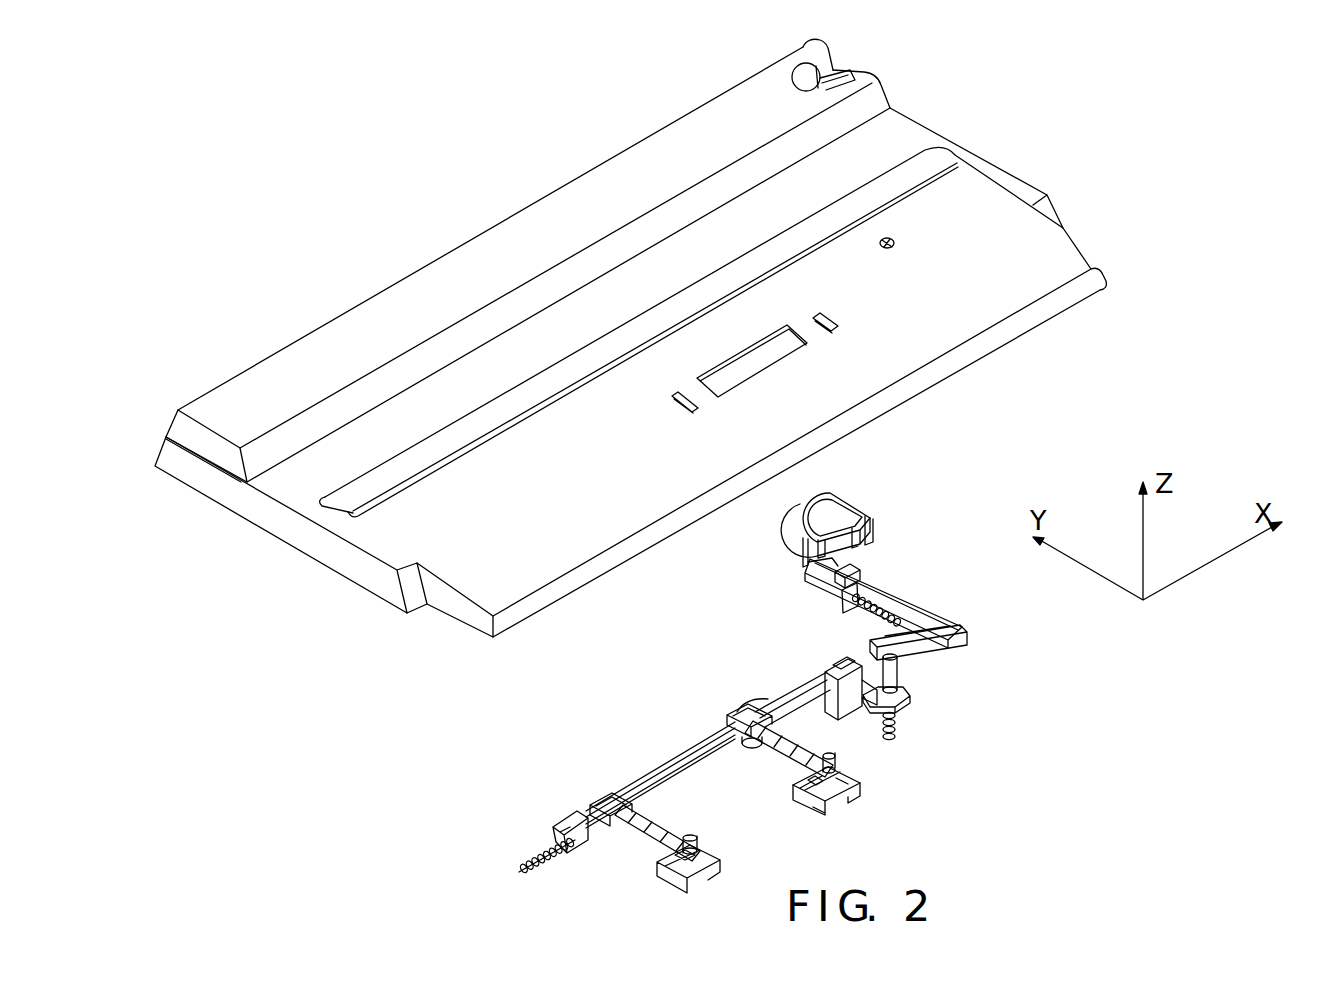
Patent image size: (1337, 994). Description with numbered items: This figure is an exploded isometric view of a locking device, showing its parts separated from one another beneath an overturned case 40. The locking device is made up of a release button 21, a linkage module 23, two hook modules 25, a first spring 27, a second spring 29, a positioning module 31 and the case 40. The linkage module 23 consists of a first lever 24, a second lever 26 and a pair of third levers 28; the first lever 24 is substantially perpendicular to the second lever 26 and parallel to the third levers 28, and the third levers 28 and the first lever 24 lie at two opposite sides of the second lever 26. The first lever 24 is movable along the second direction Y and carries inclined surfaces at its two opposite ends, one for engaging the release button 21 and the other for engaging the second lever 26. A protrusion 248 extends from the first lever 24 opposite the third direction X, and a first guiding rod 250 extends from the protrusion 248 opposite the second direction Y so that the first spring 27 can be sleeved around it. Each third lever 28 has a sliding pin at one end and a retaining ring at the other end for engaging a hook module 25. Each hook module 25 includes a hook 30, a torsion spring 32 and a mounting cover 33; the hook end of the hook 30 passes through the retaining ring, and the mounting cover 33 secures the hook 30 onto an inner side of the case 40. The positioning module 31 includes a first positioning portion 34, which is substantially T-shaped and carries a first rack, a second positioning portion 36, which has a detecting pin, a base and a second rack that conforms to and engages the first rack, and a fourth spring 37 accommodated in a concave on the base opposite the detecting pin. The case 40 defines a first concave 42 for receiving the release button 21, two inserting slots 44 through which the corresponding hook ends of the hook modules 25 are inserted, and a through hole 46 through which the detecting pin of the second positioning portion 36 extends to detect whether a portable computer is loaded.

The release button 21 is at (838, 503).
The linkage module 23 is at (677, 607).
The first lever 24 is at (830, 573).
The hook module 25 is at (933, 760).
The second lever 26 is at (803, 683).
The first spring 27 is at (880, 603).
The third lever 28 is at (738, 720).
The second spring 29 is at (535, 860).
The hook 30 is at (840, 775).
The positioning module 31 is at (977, 680).
The torsion spring 32 is at (857, 800).
The mounting cover 33 is at (850, 807).
The first positioning portion 34 is at (902, 700).
The second positioning portion 36 is at (890, 680).
The fourth spring 37 is at (900, 737).
The case 40 is at (437, 249).
The first concave 42 is at (805, 72).
The inserting slot 44 is at (833, 320).
The through hole 46 is at (892, 240).
The protrusion 248 is at (857, 587).
The first guiding rod 250 is at (920, 613).